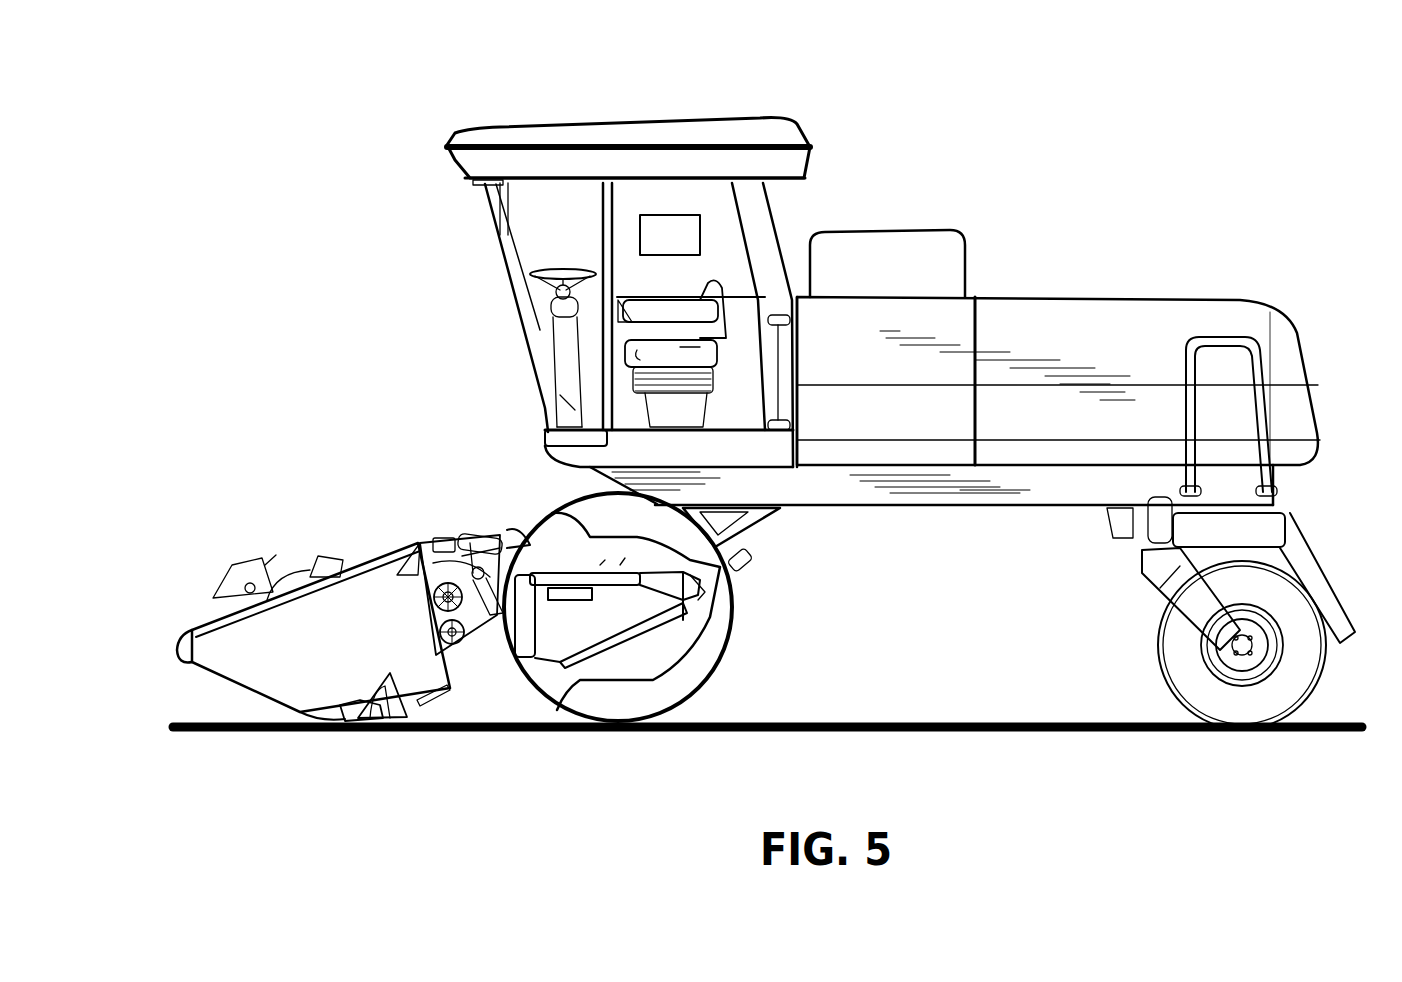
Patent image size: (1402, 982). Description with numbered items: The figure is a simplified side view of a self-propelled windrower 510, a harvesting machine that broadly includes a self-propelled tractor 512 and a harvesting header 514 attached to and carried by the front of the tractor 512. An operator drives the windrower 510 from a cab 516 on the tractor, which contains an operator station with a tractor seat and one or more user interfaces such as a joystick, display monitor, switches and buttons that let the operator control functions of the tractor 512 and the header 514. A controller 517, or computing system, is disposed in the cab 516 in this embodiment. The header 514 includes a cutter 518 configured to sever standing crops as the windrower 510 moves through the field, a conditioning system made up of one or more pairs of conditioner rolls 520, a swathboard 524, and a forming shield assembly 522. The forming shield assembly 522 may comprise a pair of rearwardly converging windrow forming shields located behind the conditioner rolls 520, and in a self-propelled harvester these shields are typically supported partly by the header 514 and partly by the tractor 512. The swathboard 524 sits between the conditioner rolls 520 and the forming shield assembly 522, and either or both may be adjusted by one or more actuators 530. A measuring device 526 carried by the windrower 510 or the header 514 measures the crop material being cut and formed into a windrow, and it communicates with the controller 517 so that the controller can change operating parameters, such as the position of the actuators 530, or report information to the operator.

The self-propelled windrower 510 is at (990, 268).
The self-propelled tractor 512 is at (1118, 315).
The harvesting header 514 is at (367, 560).
The cab 516 is at (758, 213).
The controller 517 is at (666, 212).
The cutter 518 is at (335, 725).
The conditioner rolls 520 is at (427, 604).
The forming shield assembly 522 is at (645, 658).
The swathboard 524 is at (498, 578).
The measuring device 526 is at (567, 600).
The actuators 530 is at (452, 540).